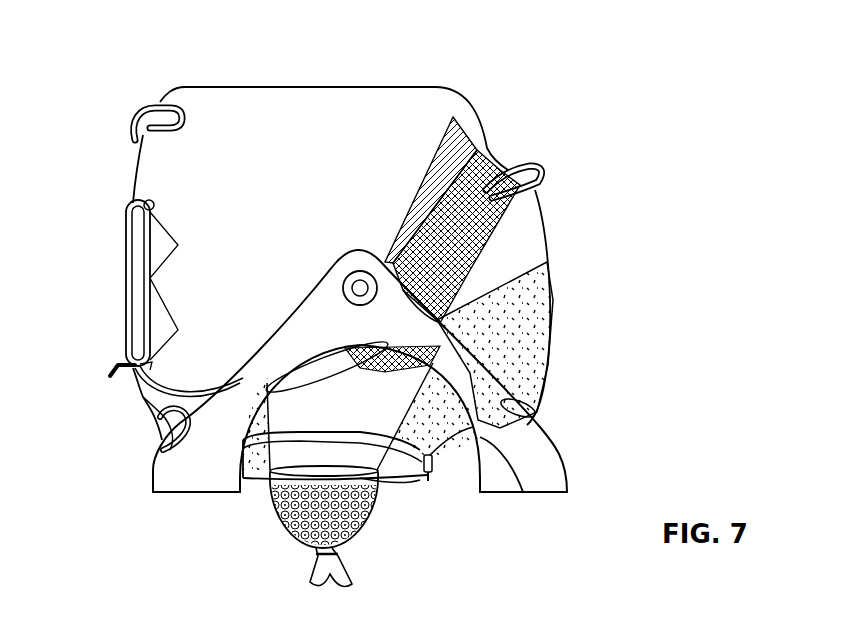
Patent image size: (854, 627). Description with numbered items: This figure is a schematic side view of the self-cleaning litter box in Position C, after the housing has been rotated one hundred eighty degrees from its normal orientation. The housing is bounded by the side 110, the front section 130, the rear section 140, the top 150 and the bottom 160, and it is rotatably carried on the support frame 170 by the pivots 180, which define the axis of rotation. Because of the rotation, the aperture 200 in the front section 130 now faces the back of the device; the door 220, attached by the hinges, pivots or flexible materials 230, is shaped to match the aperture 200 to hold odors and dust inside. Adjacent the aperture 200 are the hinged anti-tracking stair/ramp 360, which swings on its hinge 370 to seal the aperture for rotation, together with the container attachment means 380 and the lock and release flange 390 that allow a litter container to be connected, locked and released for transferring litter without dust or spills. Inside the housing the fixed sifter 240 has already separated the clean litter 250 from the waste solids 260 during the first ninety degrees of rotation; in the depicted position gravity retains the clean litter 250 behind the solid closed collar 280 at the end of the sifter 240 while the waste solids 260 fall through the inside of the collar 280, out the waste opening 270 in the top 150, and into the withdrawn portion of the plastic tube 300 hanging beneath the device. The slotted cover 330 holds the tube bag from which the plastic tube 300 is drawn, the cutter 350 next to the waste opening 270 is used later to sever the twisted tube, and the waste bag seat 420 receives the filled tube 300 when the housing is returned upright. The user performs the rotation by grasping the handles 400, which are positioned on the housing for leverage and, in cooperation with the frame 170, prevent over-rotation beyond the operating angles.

The side 110 is at (288, 213).
The front section 130 is at (140, 388).
The rear section 140 is at (548, 237).
The top 150 is at (393, 515).
The bottom 160 is at (342, 87).
The support base or frame 170 is at (338, 333).
The pivots 180 is at (357, 288).
The aperture 200 is at (96, 283).
The door 220 is at (163, 417).
The hinges, pivots, or flexible materials 230 is at (152, 364).
The sifter 240 is at (445, 215).
The clean litter 250 is at (545, 325).
The waste solids 260 is at (295, 528).
The waste opening 270 is at (278, 508).
The solid closed collar 280 is at (321, 418).
The plastic tube 300 is at (298, 548).
The slotted cover 330 is at (403, 482).
The cutter 350 is at (434, 472).
The anti-tracking stair/ramp 360 is at (163, 240).
The hinge 370 is at (154, 204).
The container attachment means 380 is at (126, 245).
The lock and release flange 390 is at (113, 364).
The handles 400 is at (133, 120).
The waste bag seat 420 is at (523, 493).